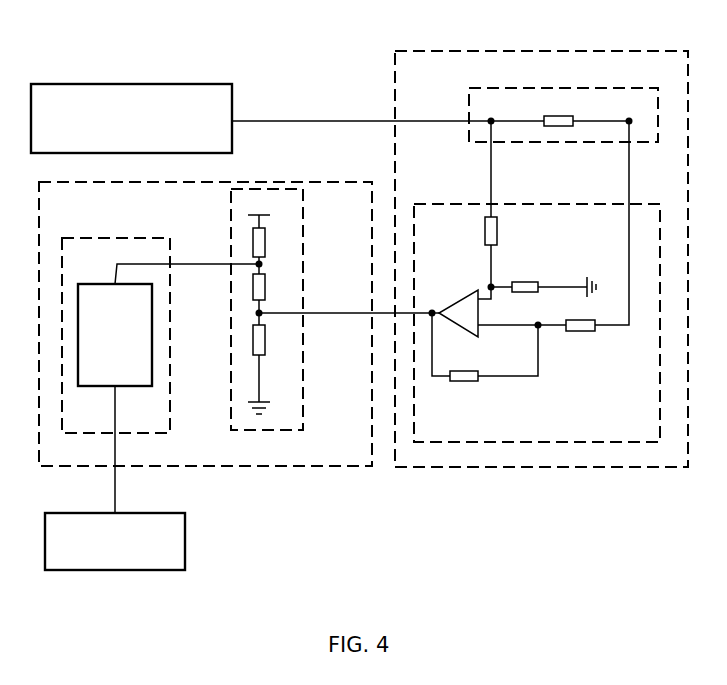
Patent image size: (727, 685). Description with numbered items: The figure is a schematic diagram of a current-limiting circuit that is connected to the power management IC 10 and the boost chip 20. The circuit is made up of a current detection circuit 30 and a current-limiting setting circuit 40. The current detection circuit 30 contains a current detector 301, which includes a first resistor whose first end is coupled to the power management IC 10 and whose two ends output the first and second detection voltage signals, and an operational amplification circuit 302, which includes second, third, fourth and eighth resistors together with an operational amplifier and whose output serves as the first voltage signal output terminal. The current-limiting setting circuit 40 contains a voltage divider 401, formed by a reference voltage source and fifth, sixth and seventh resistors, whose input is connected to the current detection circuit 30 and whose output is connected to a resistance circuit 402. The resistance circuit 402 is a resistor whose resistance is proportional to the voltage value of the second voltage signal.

The power management IC 10 is at (150, 84).
The boost chip 20 is at (147, 513).
The current detection circuit 30 is at (543, 51).
The current detector 301 is at (580, 88).
The operational amplification circuit 302 is at (538, 204).
The current-limiting setting circuit 40 is at (284, 182).
The voltage divider 401 is at (303, 253).
The resistance circuit 402 is at (115, 238).